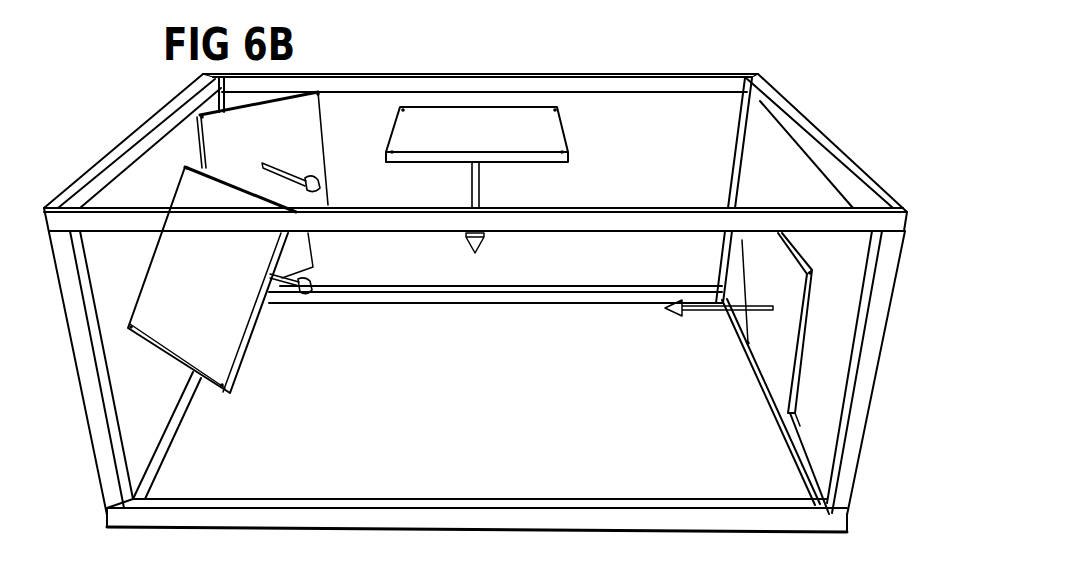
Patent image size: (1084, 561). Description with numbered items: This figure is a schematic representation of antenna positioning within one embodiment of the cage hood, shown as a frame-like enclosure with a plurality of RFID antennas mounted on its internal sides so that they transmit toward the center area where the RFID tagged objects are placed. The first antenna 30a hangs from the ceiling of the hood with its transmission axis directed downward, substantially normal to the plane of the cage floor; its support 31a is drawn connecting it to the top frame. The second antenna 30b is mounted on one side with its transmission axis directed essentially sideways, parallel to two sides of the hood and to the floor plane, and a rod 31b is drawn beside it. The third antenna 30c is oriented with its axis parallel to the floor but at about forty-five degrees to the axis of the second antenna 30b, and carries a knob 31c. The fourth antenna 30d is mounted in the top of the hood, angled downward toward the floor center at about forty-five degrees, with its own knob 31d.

The first antenna 30a is at (500, 128).
The support post 31a is at (480, 191).
The second antenna 30b is at (783, 365).
The latch rod 31b is at (710, 309).
The third antenna 30c is at (280, 143).
The handle knob 31c is at (297, 177).
The fourth antenna 30d is at (213, 270).
The handle knob 31d is at (293, 283).